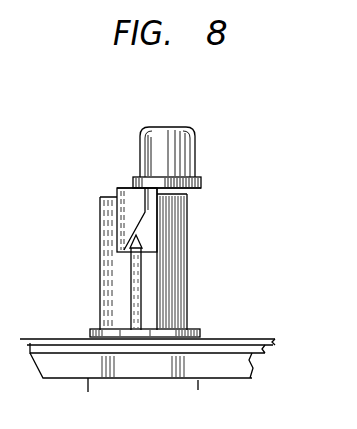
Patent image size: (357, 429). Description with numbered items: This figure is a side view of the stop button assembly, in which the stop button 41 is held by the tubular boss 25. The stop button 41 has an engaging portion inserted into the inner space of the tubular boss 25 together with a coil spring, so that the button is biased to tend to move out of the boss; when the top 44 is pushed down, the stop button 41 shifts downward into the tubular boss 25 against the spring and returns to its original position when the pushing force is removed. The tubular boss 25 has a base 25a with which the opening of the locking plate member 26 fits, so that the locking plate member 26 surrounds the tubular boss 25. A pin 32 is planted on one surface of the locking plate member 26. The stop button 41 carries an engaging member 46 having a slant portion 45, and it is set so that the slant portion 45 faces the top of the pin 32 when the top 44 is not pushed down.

The top 44 is at (161, 124).
The stop button 41 is at (200, 168).
The engaging member 46 is at (128, 210).
The slant portion 45 is at (150, 227).
The pin 32 is at (133, 273).
The tubular boss 25 is at (187, 282).
The base 25a is at (205, 332).
The locking plate member 26 is at (255, 340).